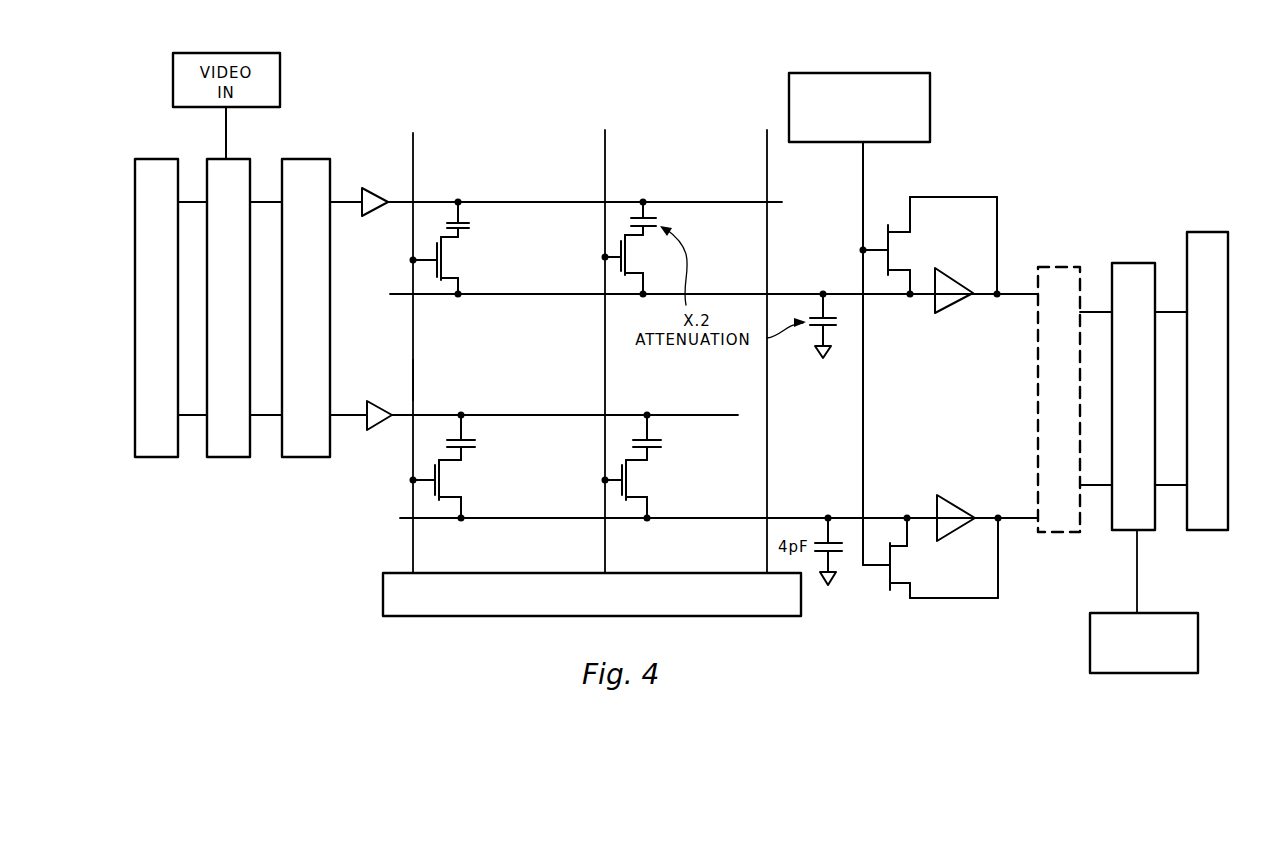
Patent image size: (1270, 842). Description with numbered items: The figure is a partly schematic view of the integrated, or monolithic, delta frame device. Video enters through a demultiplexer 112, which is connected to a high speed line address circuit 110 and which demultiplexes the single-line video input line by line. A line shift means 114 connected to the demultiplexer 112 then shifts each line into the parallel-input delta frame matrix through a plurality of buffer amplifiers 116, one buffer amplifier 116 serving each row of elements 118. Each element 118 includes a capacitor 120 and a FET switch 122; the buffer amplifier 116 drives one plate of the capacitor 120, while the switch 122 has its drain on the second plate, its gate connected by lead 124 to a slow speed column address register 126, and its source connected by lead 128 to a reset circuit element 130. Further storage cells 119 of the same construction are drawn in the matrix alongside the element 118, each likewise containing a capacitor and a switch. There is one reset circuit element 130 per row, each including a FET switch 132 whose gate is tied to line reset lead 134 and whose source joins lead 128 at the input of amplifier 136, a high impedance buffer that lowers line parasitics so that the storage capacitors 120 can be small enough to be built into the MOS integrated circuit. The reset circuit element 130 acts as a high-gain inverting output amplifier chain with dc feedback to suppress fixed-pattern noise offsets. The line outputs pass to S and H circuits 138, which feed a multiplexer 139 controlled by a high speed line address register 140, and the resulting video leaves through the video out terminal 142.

The high speed line address circuit 110 is at (167, 159).
The demultiplexer 112 is at (239, 159).
The line shift means 114 is at (295, 159).
The buffer amplifier 116 is at (374, 187).
The element 118 is at (468, 223).
The storage capacitor cell 119 is at (628, 194).
The capacitor 120 is at (470, 222).
The FET switch 122 is at (454, 258).
The lead 124 is at (415, 378).
The slow speed column (Y) address register 126 is at (757, 608).
The lead 128 is at (511, 297).
The reset circuit element 130 is at (934, 365).
The FET switch 132 is at (893, 224).
The line reset lead 134 is at (863, 169).
The amplifier 136 is at (945, 311).
The S and H circuits 138 is at (1057, 265).
The multiplexer 139 is at (1136, 263).
The high speed line address register 140 is at (1213, 232).
The video out terminal 142 is at (1170, 613).